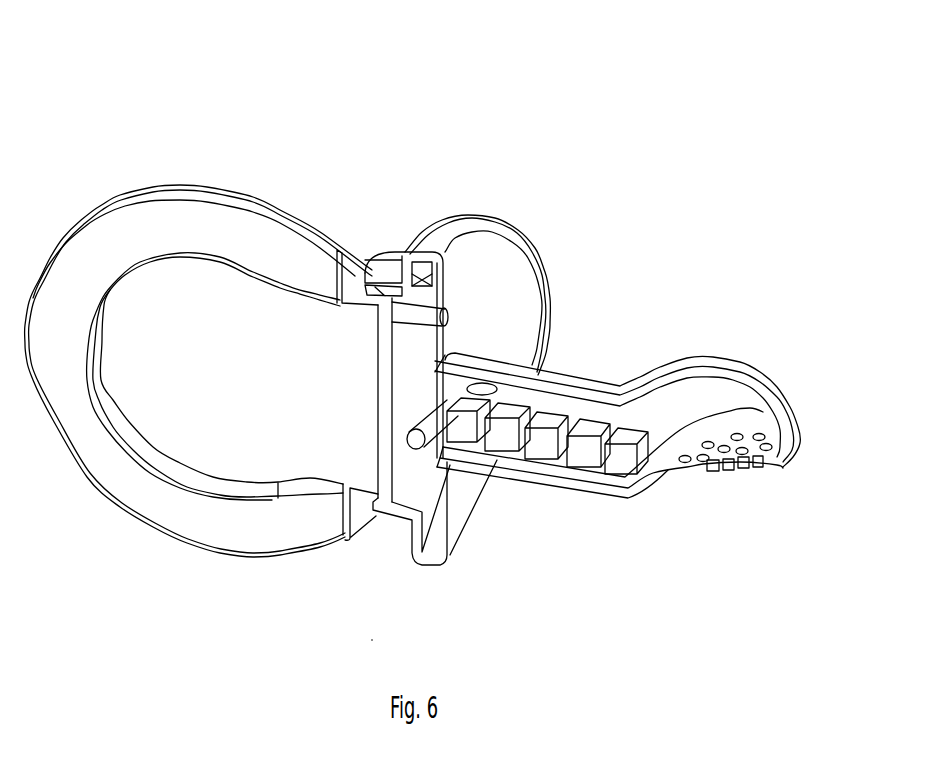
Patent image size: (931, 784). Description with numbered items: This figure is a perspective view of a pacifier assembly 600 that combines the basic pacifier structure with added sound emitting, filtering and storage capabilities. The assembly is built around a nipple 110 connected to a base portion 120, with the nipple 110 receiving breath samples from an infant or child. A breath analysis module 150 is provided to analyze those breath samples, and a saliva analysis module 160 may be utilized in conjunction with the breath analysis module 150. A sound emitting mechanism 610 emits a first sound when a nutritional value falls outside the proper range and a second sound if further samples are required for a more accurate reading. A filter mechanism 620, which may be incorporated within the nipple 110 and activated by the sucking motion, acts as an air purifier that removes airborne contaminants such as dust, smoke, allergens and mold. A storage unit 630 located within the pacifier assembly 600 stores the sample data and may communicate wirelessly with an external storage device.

The pacifier assembly 600 is at (675, 126).
The nipple 110 is at (762, 380).
The base portion 120 is at (468, 216).
The breath analysis module 150 is at (471, 430).
The saliva analysis module 160 is at (507, 433).
The sound emitting mechanism 610 is at (538, 447).
The filter mechanism 620 is at (587, 449).
The storage unit 630 is at (631, 457).